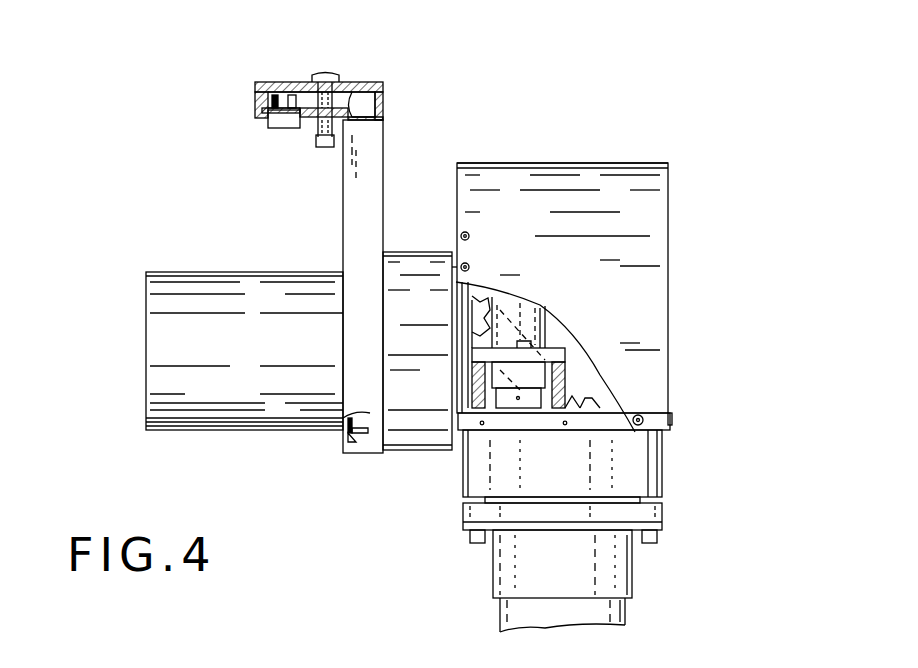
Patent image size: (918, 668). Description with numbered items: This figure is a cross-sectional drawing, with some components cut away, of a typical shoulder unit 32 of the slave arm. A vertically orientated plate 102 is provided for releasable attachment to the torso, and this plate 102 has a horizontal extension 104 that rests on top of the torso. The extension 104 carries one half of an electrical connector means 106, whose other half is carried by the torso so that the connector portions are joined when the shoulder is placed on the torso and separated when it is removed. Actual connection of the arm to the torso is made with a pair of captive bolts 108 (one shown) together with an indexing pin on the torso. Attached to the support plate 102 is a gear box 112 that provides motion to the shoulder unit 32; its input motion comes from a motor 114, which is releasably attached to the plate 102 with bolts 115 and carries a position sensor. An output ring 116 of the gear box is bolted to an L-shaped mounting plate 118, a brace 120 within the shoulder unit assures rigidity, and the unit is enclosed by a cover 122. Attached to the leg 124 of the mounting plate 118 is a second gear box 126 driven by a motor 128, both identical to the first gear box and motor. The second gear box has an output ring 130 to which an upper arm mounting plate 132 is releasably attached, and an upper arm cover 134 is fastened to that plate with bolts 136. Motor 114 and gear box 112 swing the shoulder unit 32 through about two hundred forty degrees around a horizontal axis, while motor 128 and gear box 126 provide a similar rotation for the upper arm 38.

The shoulder unit 32 is at (558, 160).
The upper arm 38 is at (632, 613).
The plate 102 is at (344, 165).
The horizontal extension 104 is at (255, 100).
The electrical connector means 106 is at (285, 128).
The captive bolt 108 is at (340, 72).
The gear box 112 is at (416, 252).
The motor 114 is at (236, 272).
The bolts 115 is at (343, 430).
The output ring 116 is at (456, 280).
The L-shaped mounting plate 118 is at (472, 294).
The brace 120 is at (482, 313).
The cover 122 is at (625, 163).
The leg 124 is at (600, 425).
The second gear box 126 is at (663, 462).
The motor 128 is at (547, 325).
The output ring 130 is at (485, 500).
The upper arm mounting plate 132 is at (663, 517).
The upper arm cover 134 is at (493, 578).
The bolts 136 is at (652, 545).